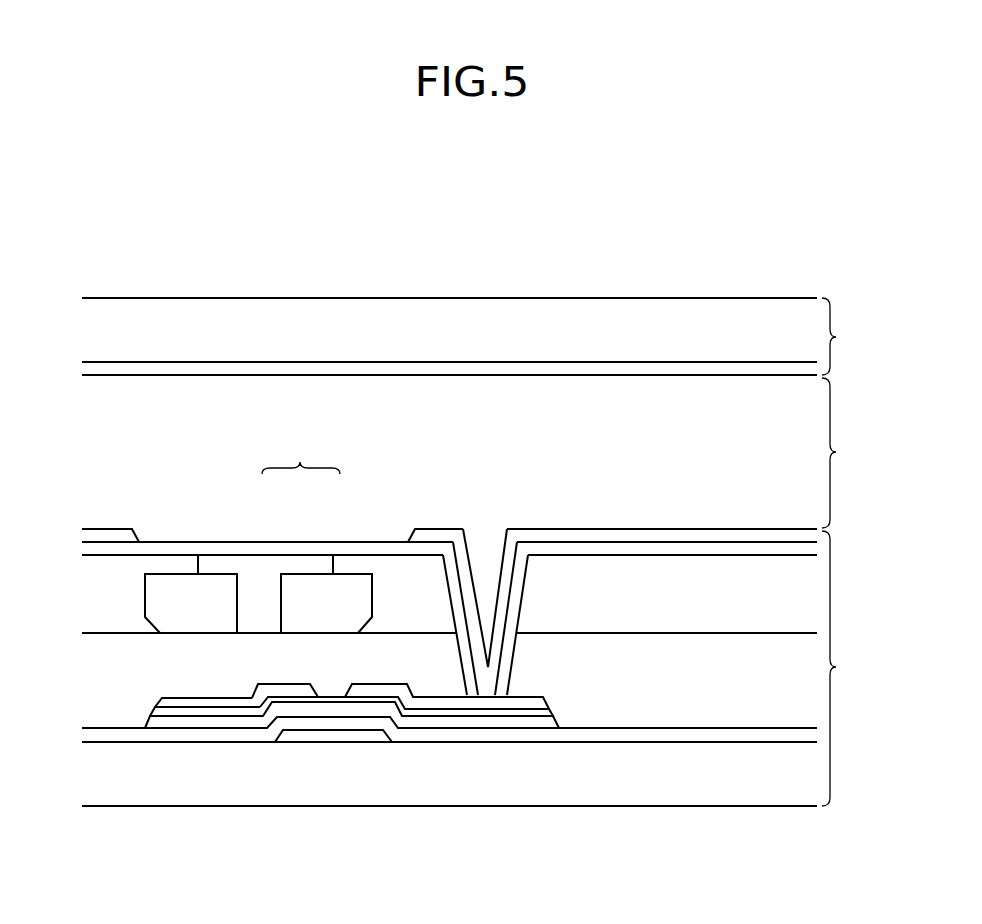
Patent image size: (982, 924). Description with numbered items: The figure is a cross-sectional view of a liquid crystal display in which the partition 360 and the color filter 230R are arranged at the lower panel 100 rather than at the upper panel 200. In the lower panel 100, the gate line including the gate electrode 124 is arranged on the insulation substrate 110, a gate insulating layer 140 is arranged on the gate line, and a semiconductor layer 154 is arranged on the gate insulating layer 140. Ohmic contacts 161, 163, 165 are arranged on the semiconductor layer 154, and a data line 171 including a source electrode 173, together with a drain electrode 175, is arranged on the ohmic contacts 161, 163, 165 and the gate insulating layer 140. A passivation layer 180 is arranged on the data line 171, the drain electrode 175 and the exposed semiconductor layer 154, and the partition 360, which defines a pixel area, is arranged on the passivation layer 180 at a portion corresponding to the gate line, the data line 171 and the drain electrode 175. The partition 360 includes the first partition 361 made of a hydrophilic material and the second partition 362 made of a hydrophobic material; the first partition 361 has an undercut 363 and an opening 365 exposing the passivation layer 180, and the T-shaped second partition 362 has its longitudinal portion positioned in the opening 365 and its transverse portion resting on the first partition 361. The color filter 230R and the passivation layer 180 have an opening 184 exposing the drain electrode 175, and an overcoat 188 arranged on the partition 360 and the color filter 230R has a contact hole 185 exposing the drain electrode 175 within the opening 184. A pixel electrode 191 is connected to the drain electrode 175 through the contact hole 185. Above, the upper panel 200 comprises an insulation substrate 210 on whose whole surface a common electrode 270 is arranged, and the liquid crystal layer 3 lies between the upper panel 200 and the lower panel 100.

The insulation substrate 210 is at (488, 322).
The upper panel 200 is at (850, 336).
The common electrode 270 is at (722, 367).
The liquid crystal layer 3 is at (838, 453).
The lower panel 100 is at (850, 668).
The pixel electrode 191 is at (108, 529).
The opening 184 is at (524, 596).
The contact hole 185 is at (505, 637).
The overcoat 188 is at (680, 548).
The color filter 230R is at (131, 610).
The partition 360 is at (301, 452).
The first partition 361 is at (317, 587).
The second partition 362 is at (267, 587).
The undercut 363 is at (366, 628).
The opening 365 is at (241, 597).
The passivation layer 180 is at (667, 695).
The insulation substrate 110 is at (743, 787).
The gate electrode 124 is at (330, 737).
The gate insulating layer 140 is at (592, 735).
The semiconductor layer 154 is at (353, 712).
The ohmic contact 161 is at (195, 713).
The ohmic contact 163 is at (305, 698).
The ohmic contact 165 is at (488, 712).
The data line 171 is at (173, 703).
The source electrode 173 is at (280, 690).
The drain electrode 175 is at (373, 690).